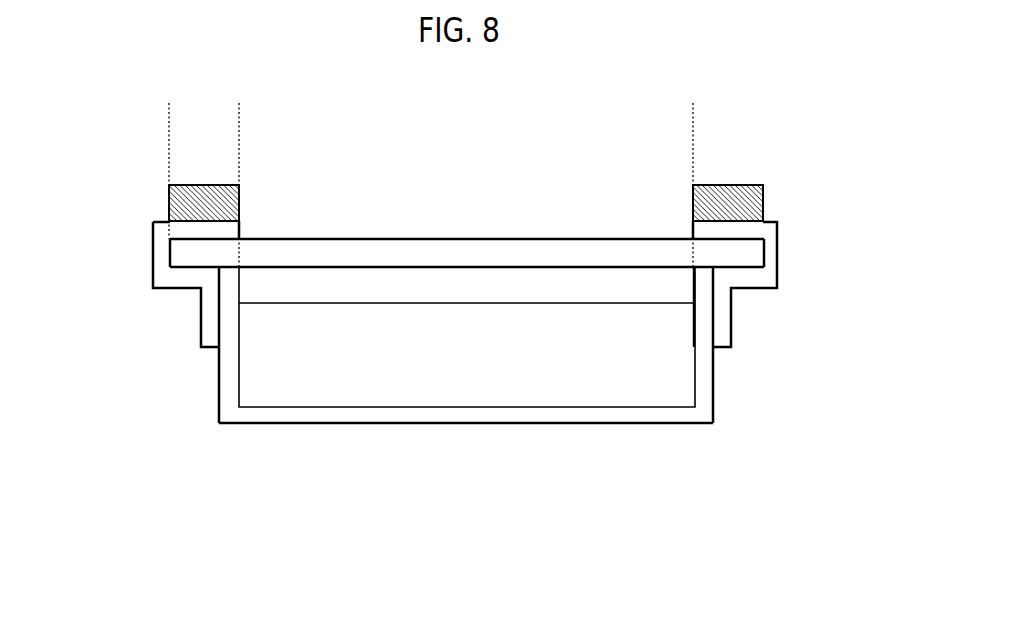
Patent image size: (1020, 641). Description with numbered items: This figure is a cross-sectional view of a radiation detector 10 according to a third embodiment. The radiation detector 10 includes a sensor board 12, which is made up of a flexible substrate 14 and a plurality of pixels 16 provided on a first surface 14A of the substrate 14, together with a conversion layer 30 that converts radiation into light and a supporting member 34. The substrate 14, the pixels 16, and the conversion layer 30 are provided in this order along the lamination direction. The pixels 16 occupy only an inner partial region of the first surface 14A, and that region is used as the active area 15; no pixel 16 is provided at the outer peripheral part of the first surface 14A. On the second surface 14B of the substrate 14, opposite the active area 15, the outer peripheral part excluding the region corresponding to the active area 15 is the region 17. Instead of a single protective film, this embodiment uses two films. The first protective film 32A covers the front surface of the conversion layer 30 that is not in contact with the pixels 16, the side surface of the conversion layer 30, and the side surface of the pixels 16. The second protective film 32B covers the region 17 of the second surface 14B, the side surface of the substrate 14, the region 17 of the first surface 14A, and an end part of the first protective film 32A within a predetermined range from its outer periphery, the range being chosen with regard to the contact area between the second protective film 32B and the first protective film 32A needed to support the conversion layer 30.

The radiation detector 10 is at (820, 495).
The sensor board 12 is at (488, 270).
The substrate 14 is at (463, 261).
The first surface 14A is at (188, 272).
The second surface 14B is at (432, 236).
The active area 15 is at (686, 158).
The pixels 16 is at (684, 297).
The region 17 is at (232, 158).
The conversion layer 30 is at (686, 377).
The first protective film 32A is at (460, 412).
The second protective film 32B is at (160, 265).
The supporting member 34 is at (737, 197).